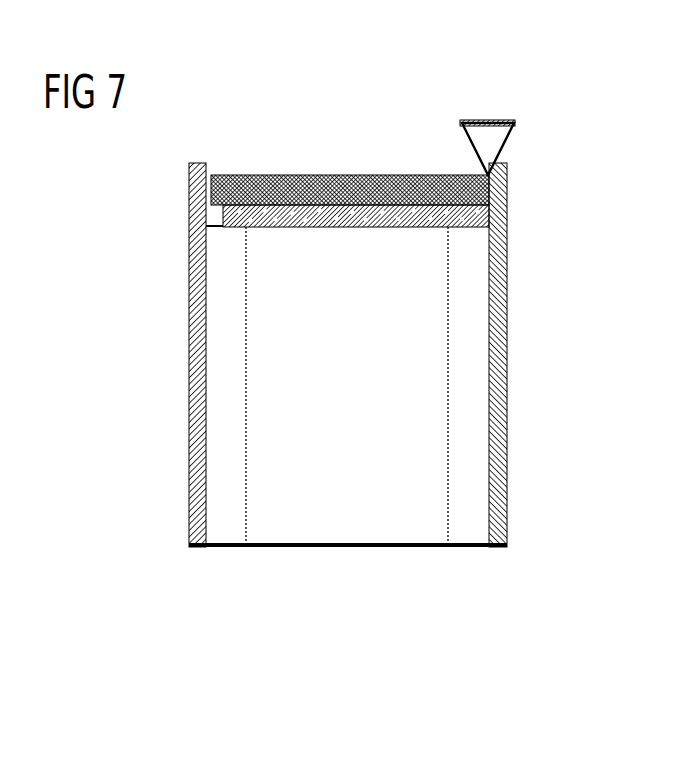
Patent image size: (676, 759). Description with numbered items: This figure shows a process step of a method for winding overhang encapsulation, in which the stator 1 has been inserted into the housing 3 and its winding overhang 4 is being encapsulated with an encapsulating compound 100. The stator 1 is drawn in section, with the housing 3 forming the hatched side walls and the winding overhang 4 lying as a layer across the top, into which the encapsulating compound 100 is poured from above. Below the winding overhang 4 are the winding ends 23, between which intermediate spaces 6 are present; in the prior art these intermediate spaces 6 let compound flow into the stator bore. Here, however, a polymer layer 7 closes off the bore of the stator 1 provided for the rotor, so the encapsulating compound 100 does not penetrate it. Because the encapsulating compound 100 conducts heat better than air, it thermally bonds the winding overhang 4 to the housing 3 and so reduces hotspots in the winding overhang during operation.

The stator 1 is at (478, 466).
The housing 3 is at (508, 415).
The winding overhang 4 is at (325, 175).
The intermediate spaces 6 is at (388, 228).
The polymer layer 7 is at (448, 228).
The winding ends 23 is at (288, 228).
The encapsulating compound 100 is at (492, 150).